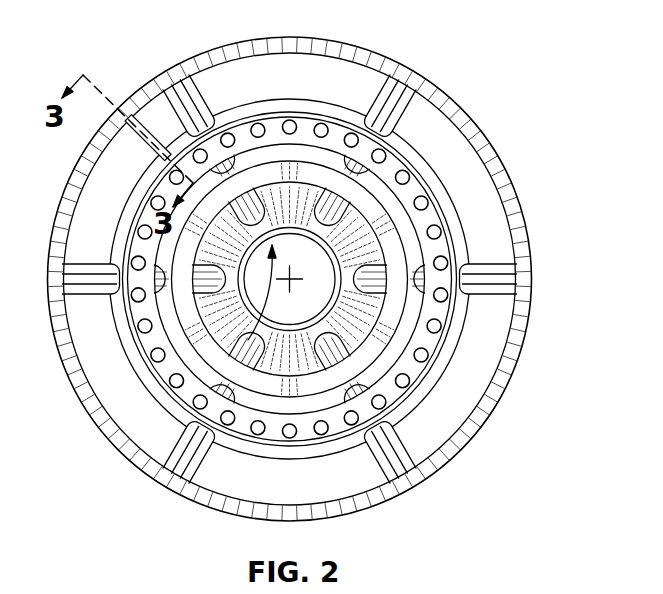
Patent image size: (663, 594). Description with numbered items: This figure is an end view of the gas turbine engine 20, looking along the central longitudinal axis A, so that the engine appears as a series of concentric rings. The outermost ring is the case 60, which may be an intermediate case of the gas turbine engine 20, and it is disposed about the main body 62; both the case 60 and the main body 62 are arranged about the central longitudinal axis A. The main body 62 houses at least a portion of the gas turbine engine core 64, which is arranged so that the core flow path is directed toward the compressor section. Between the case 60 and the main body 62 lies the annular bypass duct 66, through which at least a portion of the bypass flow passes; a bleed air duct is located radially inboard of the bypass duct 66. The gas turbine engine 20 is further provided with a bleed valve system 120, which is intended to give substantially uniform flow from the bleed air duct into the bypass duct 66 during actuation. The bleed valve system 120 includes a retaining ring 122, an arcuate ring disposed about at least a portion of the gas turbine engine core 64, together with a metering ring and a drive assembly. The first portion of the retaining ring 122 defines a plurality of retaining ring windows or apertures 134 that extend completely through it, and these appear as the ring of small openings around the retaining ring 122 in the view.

The gas turbine engine 20 is at (458, 458).
The case 60 is at (415, 67).
The main body 62 is at (430, 157).
The gas turbine engine core 64 is at (255, 325).
The bypass duct 66 is at (262, 82).
The bleed valve system 120 is at (165, 142).
The retaining ring 122 is at (433, 343).
The retaining ring windows or apertures 134 is at (440, 258).
The central longitudinal axis A is at (296, 283).